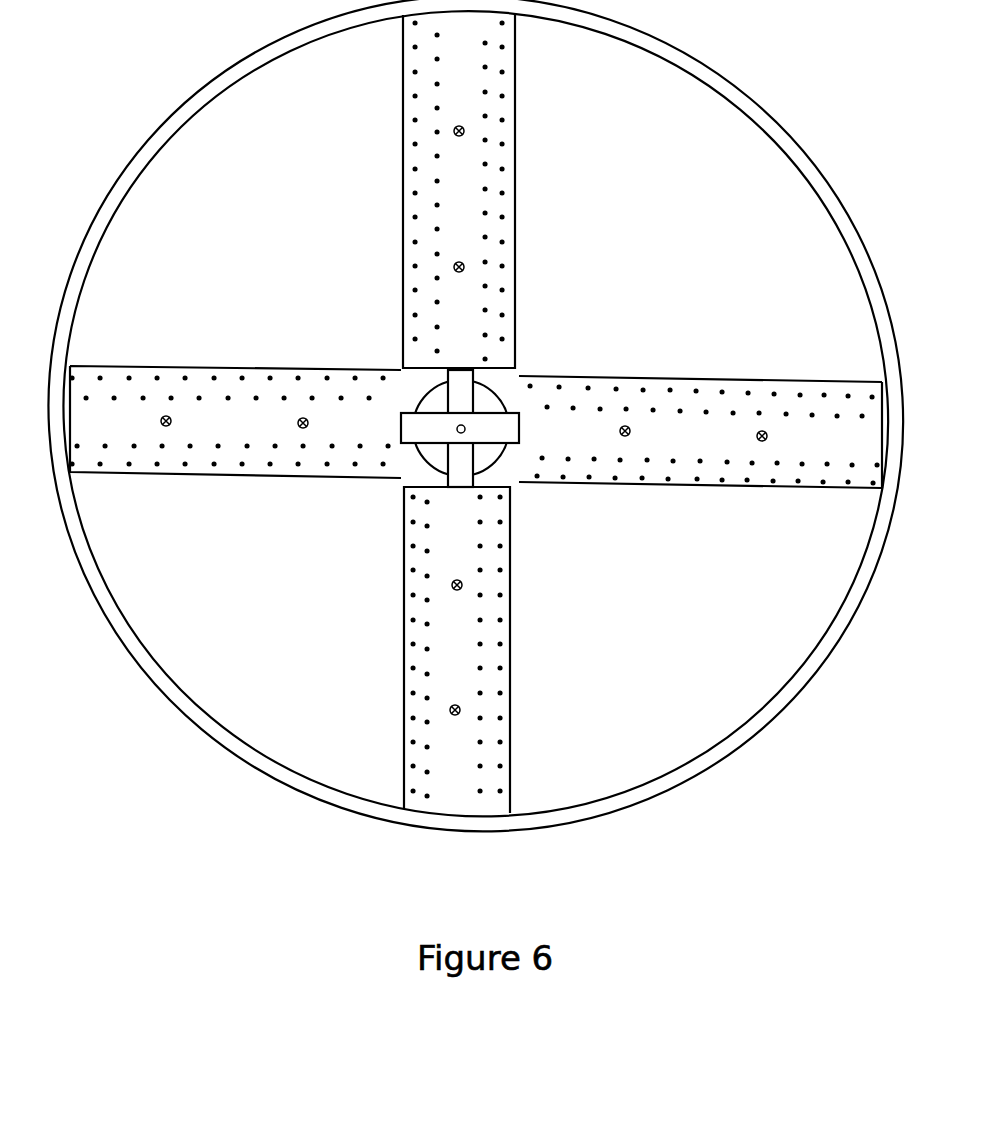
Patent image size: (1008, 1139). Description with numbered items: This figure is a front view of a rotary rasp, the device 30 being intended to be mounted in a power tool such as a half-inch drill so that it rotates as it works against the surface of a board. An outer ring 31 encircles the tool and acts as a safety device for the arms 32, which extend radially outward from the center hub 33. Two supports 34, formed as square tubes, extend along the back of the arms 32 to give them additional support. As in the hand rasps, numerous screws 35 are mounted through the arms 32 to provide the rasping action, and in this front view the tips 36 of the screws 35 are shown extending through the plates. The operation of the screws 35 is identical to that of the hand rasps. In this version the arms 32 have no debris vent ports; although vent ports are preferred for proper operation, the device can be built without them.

The rotary rasp 30 is at (185, 82).
The outer ring 31 is at (73, 267).
The arms 32 is at (300, 360).
The center hub 33 is at (462, 444).
The supports 34 is at (470, 380).
The screws 35 is at (454, 267).
The tips 36 is at (503, 273).